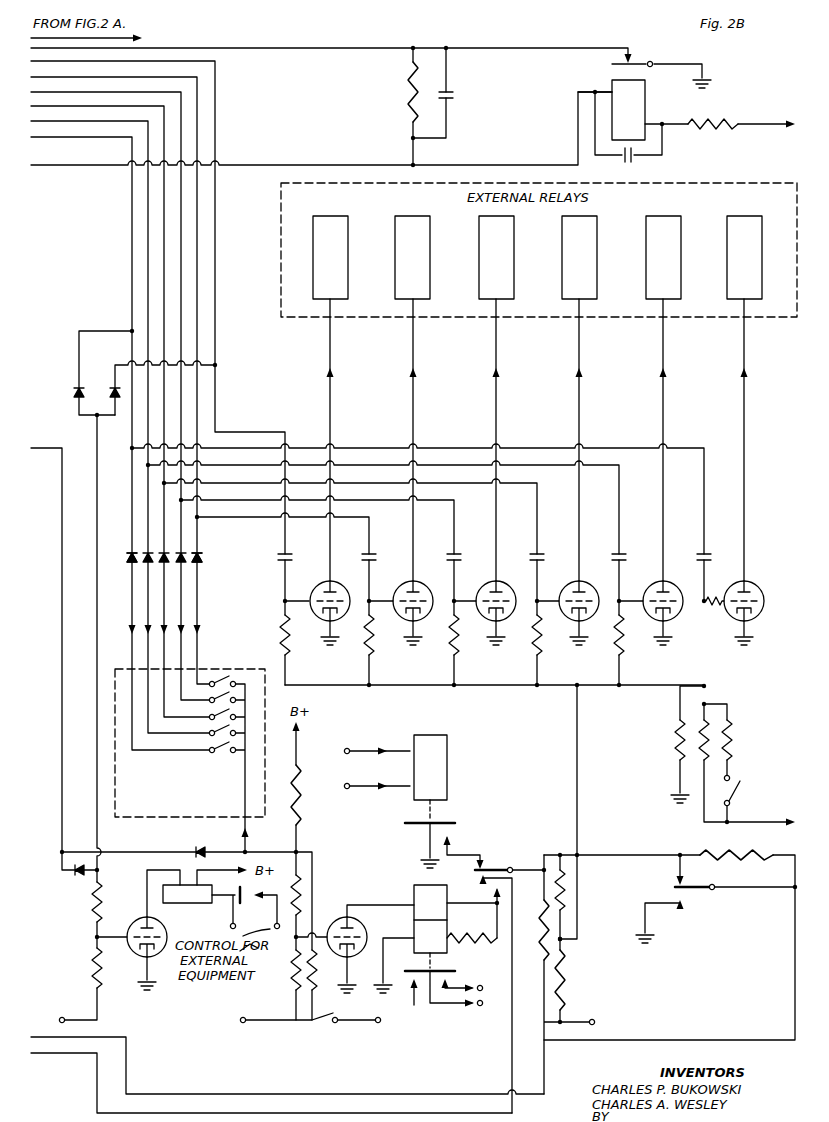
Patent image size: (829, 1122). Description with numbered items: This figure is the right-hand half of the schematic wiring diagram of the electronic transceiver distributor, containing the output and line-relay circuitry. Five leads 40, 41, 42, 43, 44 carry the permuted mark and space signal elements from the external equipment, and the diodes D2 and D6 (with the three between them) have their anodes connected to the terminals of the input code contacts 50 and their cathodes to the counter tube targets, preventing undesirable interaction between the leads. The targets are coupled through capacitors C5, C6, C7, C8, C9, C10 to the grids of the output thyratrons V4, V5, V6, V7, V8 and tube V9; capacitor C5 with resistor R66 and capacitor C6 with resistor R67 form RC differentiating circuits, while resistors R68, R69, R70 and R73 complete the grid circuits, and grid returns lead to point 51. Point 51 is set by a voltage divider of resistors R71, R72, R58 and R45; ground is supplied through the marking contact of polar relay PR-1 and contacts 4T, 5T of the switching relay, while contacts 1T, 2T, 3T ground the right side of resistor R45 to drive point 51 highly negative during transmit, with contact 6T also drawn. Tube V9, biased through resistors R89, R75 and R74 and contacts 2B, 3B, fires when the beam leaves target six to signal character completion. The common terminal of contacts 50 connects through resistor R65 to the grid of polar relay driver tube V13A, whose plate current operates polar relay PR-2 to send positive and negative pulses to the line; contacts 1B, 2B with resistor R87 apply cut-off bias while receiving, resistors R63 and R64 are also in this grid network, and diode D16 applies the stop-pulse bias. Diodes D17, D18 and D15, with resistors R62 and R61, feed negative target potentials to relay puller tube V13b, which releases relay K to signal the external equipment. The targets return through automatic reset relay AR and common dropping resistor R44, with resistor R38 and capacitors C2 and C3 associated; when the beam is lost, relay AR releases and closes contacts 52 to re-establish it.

The contacts 52 is at (636, 63).
The input code contacts 50 is at (220, 670).
The lead 40 is at (198, 608).
The lead 41 is at (182, 592).
The lead 42 is at (165, 582).
The lead 43 is at (147, 572).
The lead 44 is at (132, 602).
The point 51 is at (562, 940).
The resistor R38 is at (410, 98).
The capacitor C2 is at (447, 95).
The automatic reset relay AR is at (612, 84).
The capacitor C3 is at (622, 162).
The common voltage dropping resistor R44 is at (708, 128).
The diode D17 is at (78, 382).
The diode D18 is at (112, 382).
The diode D6 is at (130, 554).
The diode D2 is at (199, 553).
The capacitor C5 is at (283, 548).
The coupling capacitor C6 is at (376, 552).
The coupling capacitor C7 is at (461, 552).
The coupling capacitor C8 is at (544, 552).
The coupling capacitor C9 is at (616, 550).
The coupling capacitor C10 is at (711, 548).
The output thyratron V4 is at (346, 588).
The output thyratron V5 is at (430, 588).
The output thyratron V6 is at (513, 588).
The output thyratron V7 is at (596, 588).
The output thyratron V8 is at (680, 588).
The tube V9 is at (762, 588).
The resistor R66 is at (282, 636).
The resistor R67 is at (374, 652).
The resistor R68 is at (458, 652).
The resistor R69 is at (541, 652).
The resistor R70 is at (623, 650).
The resistor R73 is at (714, 606).
The resistor R75 is at (677, 750).
The resistor R74 is at (700, 790).
The resistor R89 is at (732, 738).
The contact 3B is at (730, 776).
The contact 2B is at (730, 803).
The diode D15 is at (79, 876).
The diode D16 is at (212, 836).
The resistor R62 is at (92, 898).
The resistor R61 is at (92, 968).
The relay puller tube V13b is at (126, 944).
The relay K is at (221, 902).
The resistor R63 is at (298, 818).
The resistor R65 is at (293, 896).
The resistor R64 is at (292, 984).
The resistor R87 is at (314, 960).
The contact 1B is at (340, 1031).
The polar relay driver tube V13A is at (333, 940).
The polar relay PR-1 is at (448, 768).
The contact 4T is at (464, 851).
The contact 5T is at (500, 866).
The contact 6T is at (482, 884).
The polar relay PR-2 is at (410, 895).
The resistor R58 is at (540, 912).
The resistor R45 is at (669, 938).
The contact 1T is at (691, 863).
The contact 2T is at (751, 891).
The contact 3T is at (661, 921).
The resistor R72 is at (565, 900).
The resistor R71 is at (566, 992).